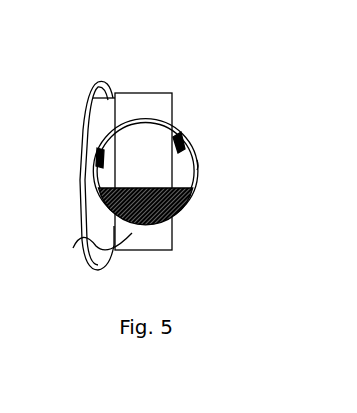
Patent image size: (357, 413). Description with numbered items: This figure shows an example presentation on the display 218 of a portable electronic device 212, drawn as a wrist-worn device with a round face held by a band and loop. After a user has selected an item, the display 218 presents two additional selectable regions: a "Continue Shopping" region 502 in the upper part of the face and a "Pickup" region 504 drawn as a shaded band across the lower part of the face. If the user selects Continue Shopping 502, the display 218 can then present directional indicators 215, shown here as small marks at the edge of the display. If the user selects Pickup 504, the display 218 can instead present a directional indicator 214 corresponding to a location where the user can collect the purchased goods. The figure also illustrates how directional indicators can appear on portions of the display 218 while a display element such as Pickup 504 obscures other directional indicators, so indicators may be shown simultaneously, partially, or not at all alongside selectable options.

The portable electronic device 212 is at (98, 271).
The directional indicator 214 is at (92, 152).
The directional indicator 215 is at (188, 134).
The display 218 is at (190, 158).
The Continue Shopping selectable region 502 is at (137, 142).
The Pickup selectable region 504 is at (105, 204).